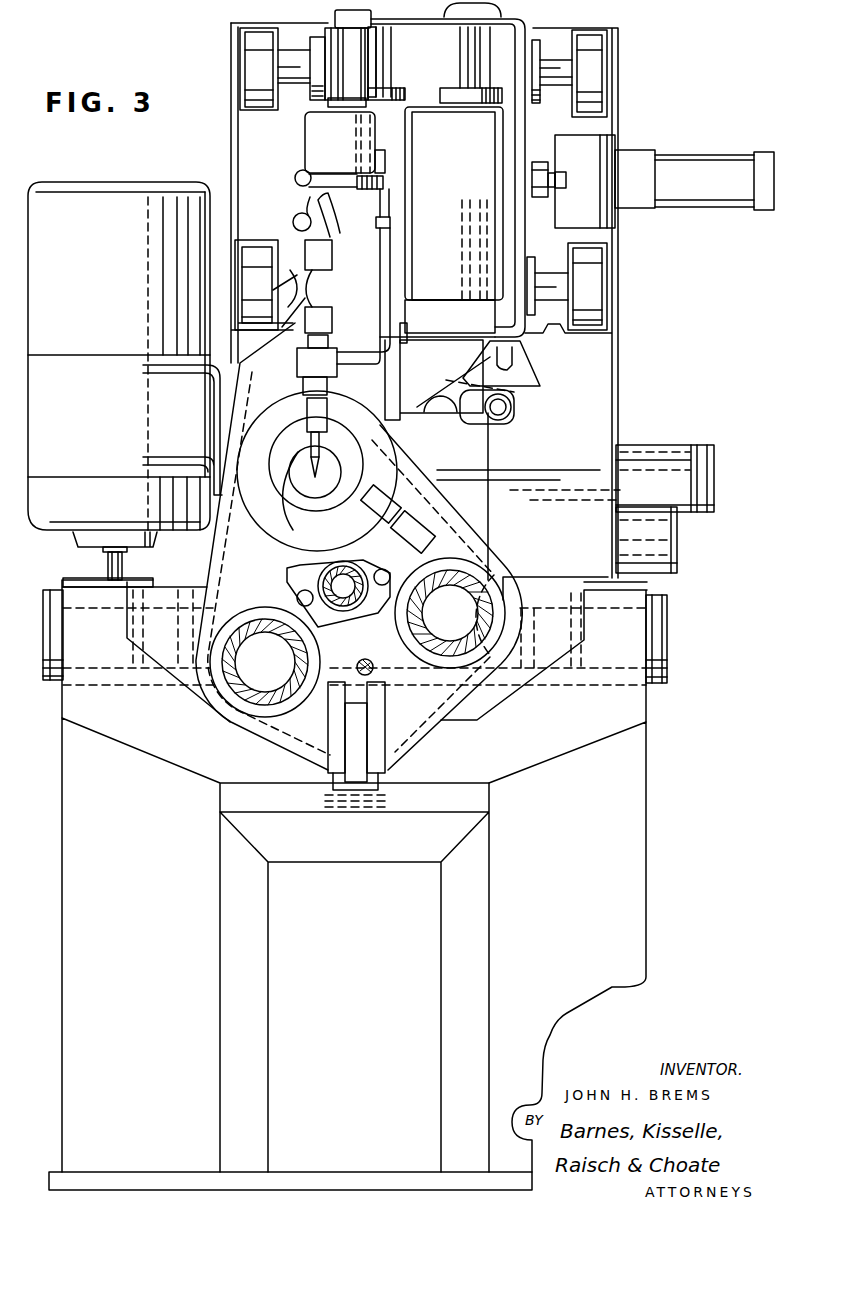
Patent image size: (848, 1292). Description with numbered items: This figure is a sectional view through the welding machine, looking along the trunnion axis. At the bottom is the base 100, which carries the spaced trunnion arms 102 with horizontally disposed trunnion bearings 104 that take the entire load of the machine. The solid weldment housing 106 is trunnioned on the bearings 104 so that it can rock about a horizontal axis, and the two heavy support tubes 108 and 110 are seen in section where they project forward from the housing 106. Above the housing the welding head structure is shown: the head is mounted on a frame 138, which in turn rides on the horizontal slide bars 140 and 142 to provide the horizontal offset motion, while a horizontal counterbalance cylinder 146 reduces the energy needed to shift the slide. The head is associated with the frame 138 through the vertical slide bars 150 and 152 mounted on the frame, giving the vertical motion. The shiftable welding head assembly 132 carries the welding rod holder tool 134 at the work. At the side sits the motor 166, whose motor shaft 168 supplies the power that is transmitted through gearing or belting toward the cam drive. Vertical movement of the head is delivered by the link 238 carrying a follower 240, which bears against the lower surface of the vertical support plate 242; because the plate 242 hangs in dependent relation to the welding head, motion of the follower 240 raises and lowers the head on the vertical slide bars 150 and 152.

The base 100 is at (629, 800).
The trunnion arms 102 is at (95, 653).
The trunnion bearings 104 is at (48, 607).
The weldment housing 106 is at (250, 563).
The support tube 108 is at (247, 695).
The support tube 110 is at (407, 632).
The welding head assembly 132 is at (355, 238).
The welding rod holder tool 134 is at (336, 385).
The frame 138 is at (521, 67).
The horizontal slide bar 140 is at (283, 273).
The horizontal slide bar 142 is at (300, 88).
The horizontal counterbalance cylinder 146 is at (707, 165).
The vertical slide bar 150 is at (381, 68).
The vertical slide bar 152 is at (467, 38).
The motor 166 is at (125, 384).
The motor shaft 168 is at (110, 566).
The link 238 is at (487, 422).
The follower 240 is at (511, 409).
The vertical support plate 242 is at (527, 378).